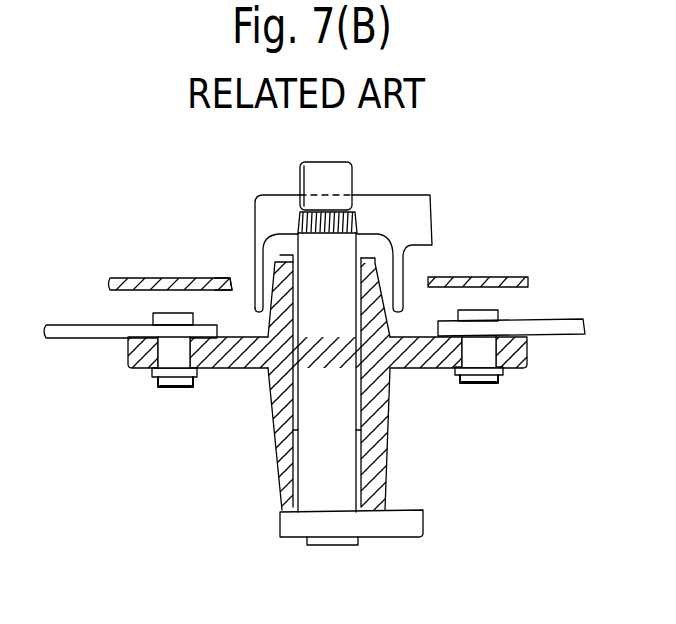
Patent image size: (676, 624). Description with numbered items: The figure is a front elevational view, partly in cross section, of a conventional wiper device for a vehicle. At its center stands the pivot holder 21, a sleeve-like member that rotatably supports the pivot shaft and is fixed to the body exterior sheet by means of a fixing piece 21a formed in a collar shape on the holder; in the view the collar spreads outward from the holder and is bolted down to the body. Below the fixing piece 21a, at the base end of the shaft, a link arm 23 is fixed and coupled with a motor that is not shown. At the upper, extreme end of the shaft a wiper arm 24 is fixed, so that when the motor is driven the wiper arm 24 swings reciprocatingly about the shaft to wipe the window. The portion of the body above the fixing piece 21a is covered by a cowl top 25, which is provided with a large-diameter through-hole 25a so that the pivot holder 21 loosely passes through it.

The pivot holder 21 is at (280, 445).
The fixing piece 21a is at (215, 368).
The link arm 23 is at (413, 523).
The wiper arm 24 is at (417, 227).
The cowl top 25 is at (135, 278).
The through-hole 25a is at (232, 280).